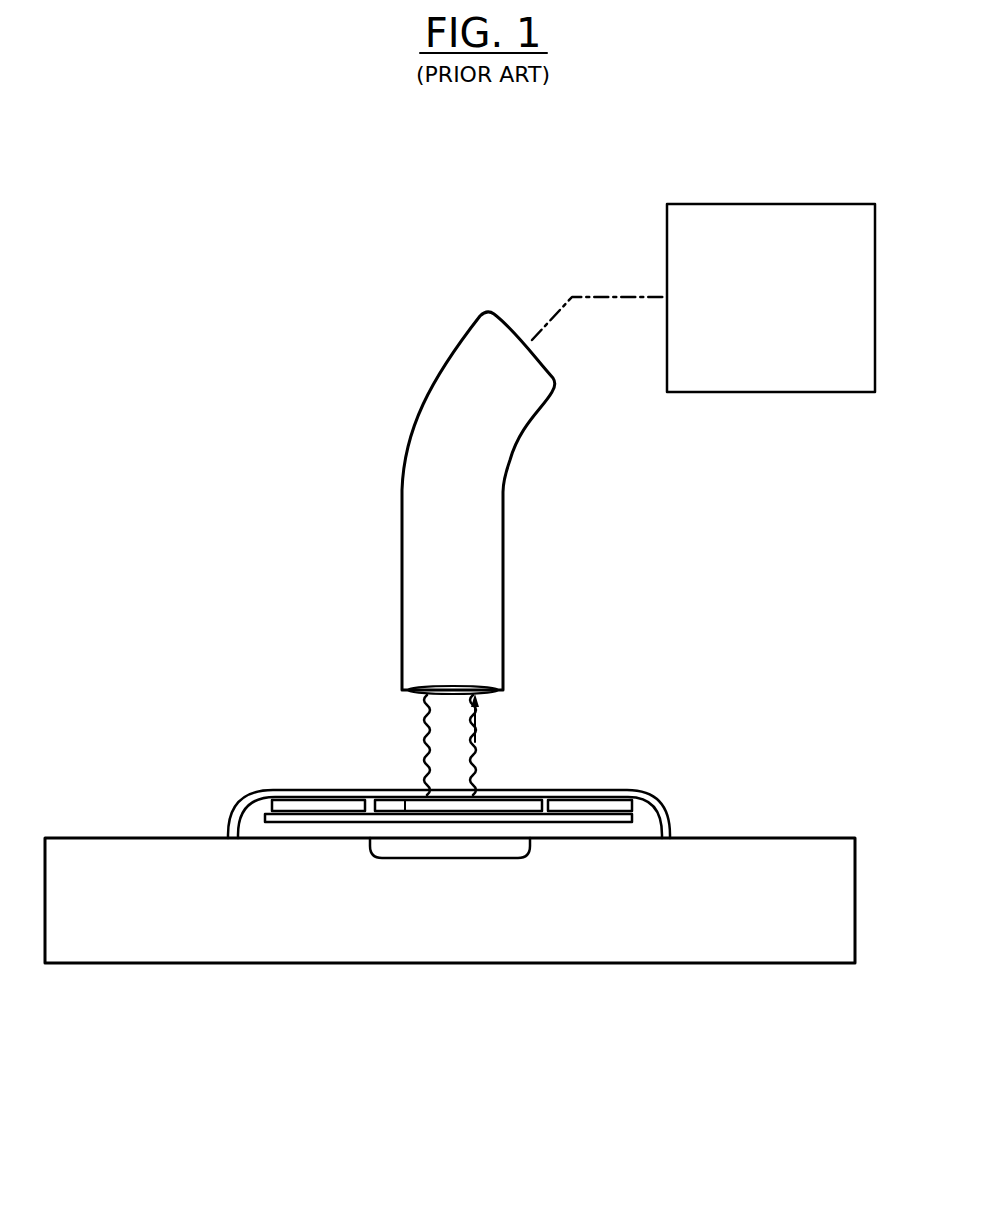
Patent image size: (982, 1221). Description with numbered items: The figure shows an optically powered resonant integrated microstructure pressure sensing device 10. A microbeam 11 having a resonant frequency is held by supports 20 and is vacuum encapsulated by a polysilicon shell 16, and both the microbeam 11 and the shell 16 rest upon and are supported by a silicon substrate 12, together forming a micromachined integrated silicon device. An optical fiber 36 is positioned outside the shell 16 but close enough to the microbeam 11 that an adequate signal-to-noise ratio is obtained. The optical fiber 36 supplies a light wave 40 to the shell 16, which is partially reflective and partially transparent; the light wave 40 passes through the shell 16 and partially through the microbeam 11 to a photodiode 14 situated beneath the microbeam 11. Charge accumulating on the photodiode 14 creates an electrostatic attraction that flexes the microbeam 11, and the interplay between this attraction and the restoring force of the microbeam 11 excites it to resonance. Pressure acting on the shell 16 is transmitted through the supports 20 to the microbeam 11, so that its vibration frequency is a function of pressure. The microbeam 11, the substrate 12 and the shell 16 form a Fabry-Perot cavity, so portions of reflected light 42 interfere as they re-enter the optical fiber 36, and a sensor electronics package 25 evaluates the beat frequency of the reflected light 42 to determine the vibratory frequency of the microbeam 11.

The O-RIMS pressure sensing device 10 is at (755, 760).
The microbeam 11 is at (405, 808).
The silicon substrate 12 is at (252, 963).
The photodiode 14 is at (487, 858).
The polysilicon shell 16 is at (237, 803).
The supports 20 is at (333, 805).
The sensor electronics package 25 is at (786, 312).
The optical fiber 36 is at (476, 568).
The light wave 40 is at (425, 737).
The reflected light 42 is at (480, 735).